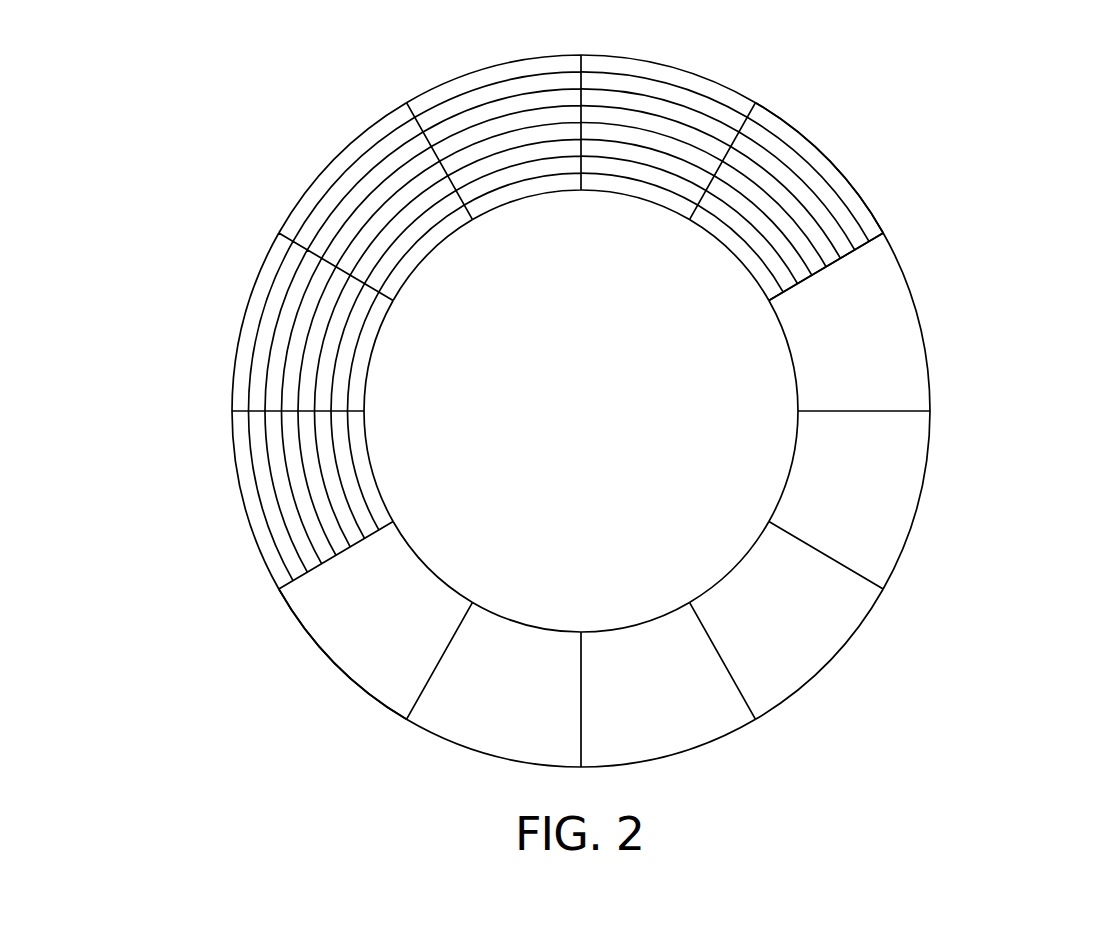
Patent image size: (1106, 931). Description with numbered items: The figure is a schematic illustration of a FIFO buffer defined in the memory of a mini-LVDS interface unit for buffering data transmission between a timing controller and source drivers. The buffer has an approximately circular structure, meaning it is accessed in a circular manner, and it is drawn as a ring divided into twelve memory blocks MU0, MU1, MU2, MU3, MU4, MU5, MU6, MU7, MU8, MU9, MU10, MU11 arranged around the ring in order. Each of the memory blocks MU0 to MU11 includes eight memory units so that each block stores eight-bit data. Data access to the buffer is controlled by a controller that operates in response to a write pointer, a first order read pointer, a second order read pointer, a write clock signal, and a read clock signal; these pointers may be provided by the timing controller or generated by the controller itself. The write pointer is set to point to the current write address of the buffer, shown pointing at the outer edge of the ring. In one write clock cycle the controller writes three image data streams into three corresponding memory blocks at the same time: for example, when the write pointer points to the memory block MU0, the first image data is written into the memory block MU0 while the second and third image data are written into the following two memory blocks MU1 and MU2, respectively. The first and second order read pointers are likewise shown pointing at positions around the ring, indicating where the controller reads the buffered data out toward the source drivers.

The memory block MU0 is at (430, 567).
The memory block MU1 is at (528, 623).
The memory block MU2 is at (638, 623).
The memory block MU3 is at (735, 567).
The memory block MU4 is at (790, 467).
The memory block MU5 is at (787, 353).
The memory block MU6 is at (730, 257).
The memory block MU7 is at (633, 200).
The memory block MU8 is at (523, 200).
The memory block MU9 is at (430, 257).
The memory block MU10 is at (372, 357).
The memory block MU11 is at (377, 470).